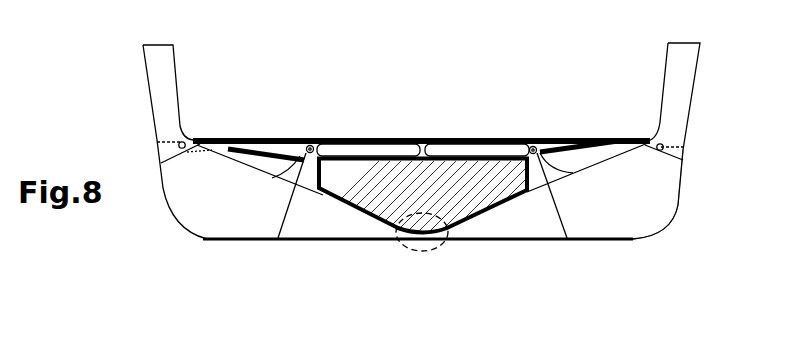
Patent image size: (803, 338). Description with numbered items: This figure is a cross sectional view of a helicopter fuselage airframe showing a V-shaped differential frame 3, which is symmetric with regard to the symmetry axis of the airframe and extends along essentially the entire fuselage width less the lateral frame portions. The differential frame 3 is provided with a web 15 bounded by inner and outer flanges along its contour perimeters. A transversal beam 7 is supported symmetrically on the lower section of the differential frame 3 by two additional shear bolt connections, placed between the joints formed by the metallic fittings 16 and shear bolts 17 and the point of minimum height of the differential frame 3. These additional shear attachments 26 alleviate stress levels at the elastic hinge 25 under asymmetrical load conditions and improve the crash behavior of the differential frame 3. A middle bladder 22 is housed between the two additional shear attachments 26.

The differential frame 3 is at (702, 78).
The transversal beam 7 is at (388, 138).
The middle bladder 22 is at (465, 178).
The additional shear attachments 26 is at (310, 136).
The shear bolts 17 is at (674, 148).
The metallic fittings 16 is at (688, 158).
The web 15 is at (607, 203).
The elastic hinge 25 is at (430, 255).